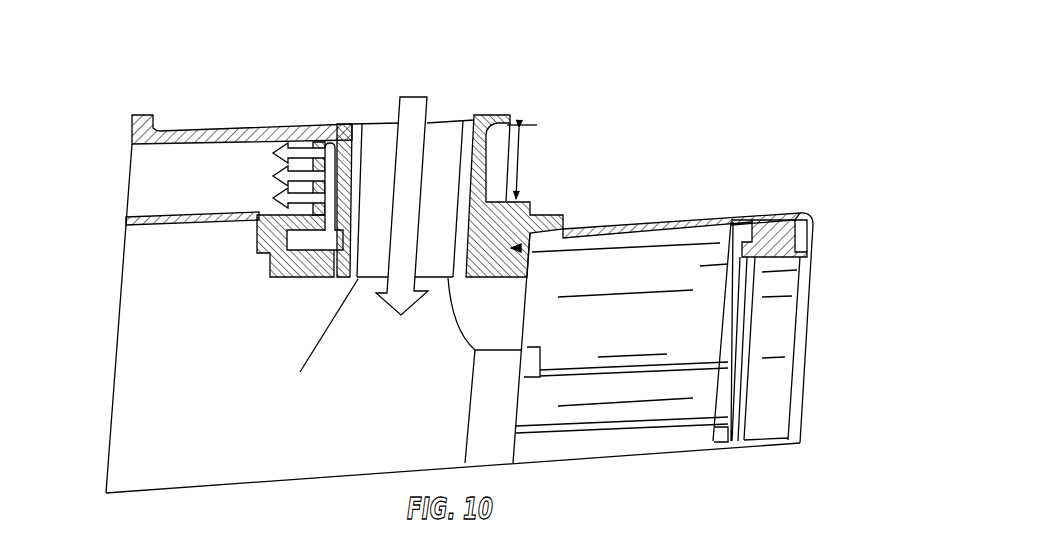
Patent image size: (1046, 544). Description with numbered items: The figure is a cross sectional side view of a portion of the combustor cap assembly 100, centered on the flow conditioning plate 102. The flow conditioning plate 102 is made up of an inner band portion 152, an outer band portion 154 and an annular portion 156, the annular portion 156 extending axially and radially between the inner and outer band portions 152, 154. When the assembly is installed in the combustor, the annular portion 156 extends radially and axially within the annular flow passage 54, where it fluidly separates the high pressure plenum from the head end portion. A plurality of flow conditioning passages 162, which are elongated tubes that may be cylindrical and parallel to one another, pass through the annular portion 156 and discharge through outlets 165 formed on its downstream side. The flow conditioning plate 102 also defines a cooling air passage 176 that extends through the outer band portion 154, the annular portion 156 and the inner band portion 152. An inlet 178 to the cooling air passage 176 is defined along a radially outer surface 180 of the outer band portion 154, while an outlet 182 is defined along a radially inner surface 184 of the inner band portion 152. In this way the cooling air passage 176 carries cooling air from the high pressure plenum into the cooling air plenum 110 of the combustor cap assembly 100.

The combustor cap assembly 100 is at (580, 104).
The flow conditioning plate 102 is at (283, 119).
The cooling air plenum 110 is at (398, 423).
The inner band portion 152 is at (303, 284).
The outer band portion 154 is at (340, 119).
The annular portion 156 is at (506, 126).
The flow conditioning passages 162 is at (298, 83).
The outlets 165 is at (322, 199).
The cooling air passage 176 is at (450, 138).
The inlet 178 is at (445, 108).
The radially outer surface 180 is at (376, 122).
The outlet 182 is at (441, 276).
The radially inner surface 184 is at (358, 281).
The annular flow passage 54 is at (523, 168).